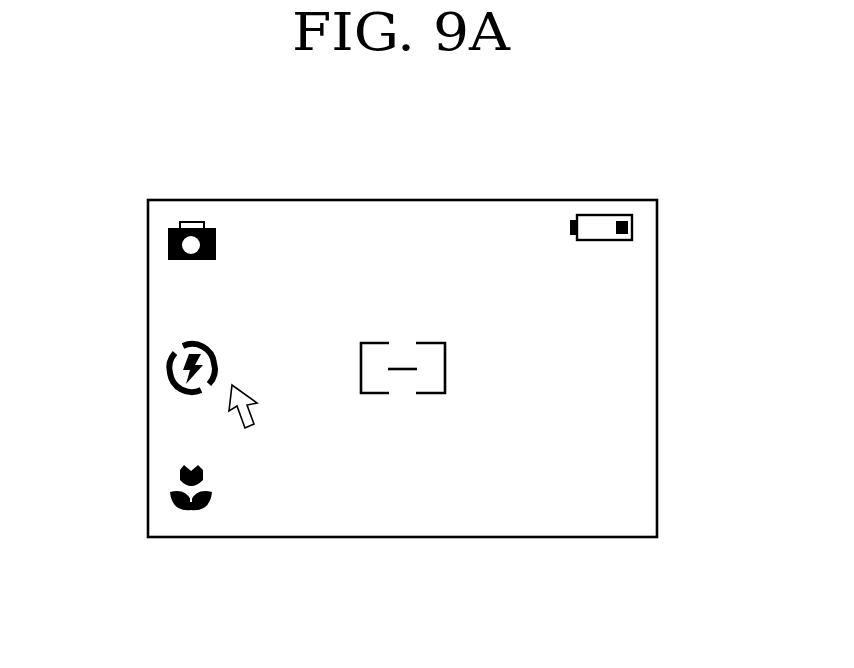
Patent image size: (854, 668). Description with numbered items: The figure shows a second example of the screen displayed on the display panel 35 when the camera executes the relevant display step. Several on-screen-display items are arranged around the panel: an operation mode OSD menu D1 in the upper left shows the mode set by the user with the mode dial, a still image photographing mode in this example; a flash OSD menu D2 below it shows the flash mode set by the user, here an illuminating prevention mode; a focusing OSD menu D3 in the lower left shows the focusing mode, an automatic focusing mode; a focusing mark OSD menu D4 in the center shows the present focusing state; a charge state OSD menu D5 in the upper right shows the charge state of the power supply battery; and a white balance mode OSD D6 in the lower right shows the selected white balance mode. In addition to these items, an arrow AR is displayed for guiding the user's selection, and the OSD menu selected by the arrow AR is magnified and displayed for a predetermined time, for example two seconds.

The display panel 35 is at (403, 200).
The operation mode OSD menu D1 is at (168, 243).
The flash OSD menu D2 is at (168, 368).
The arrow AR is at (228, 406).
The focusing OSD menu D3 is at (175, 492).
The focusing mark OSD menu D4 is at (387, 425).
The charge state OSD menu D5 is at (630, 226).
The white balance mode OSD D6 is at (644, 493).